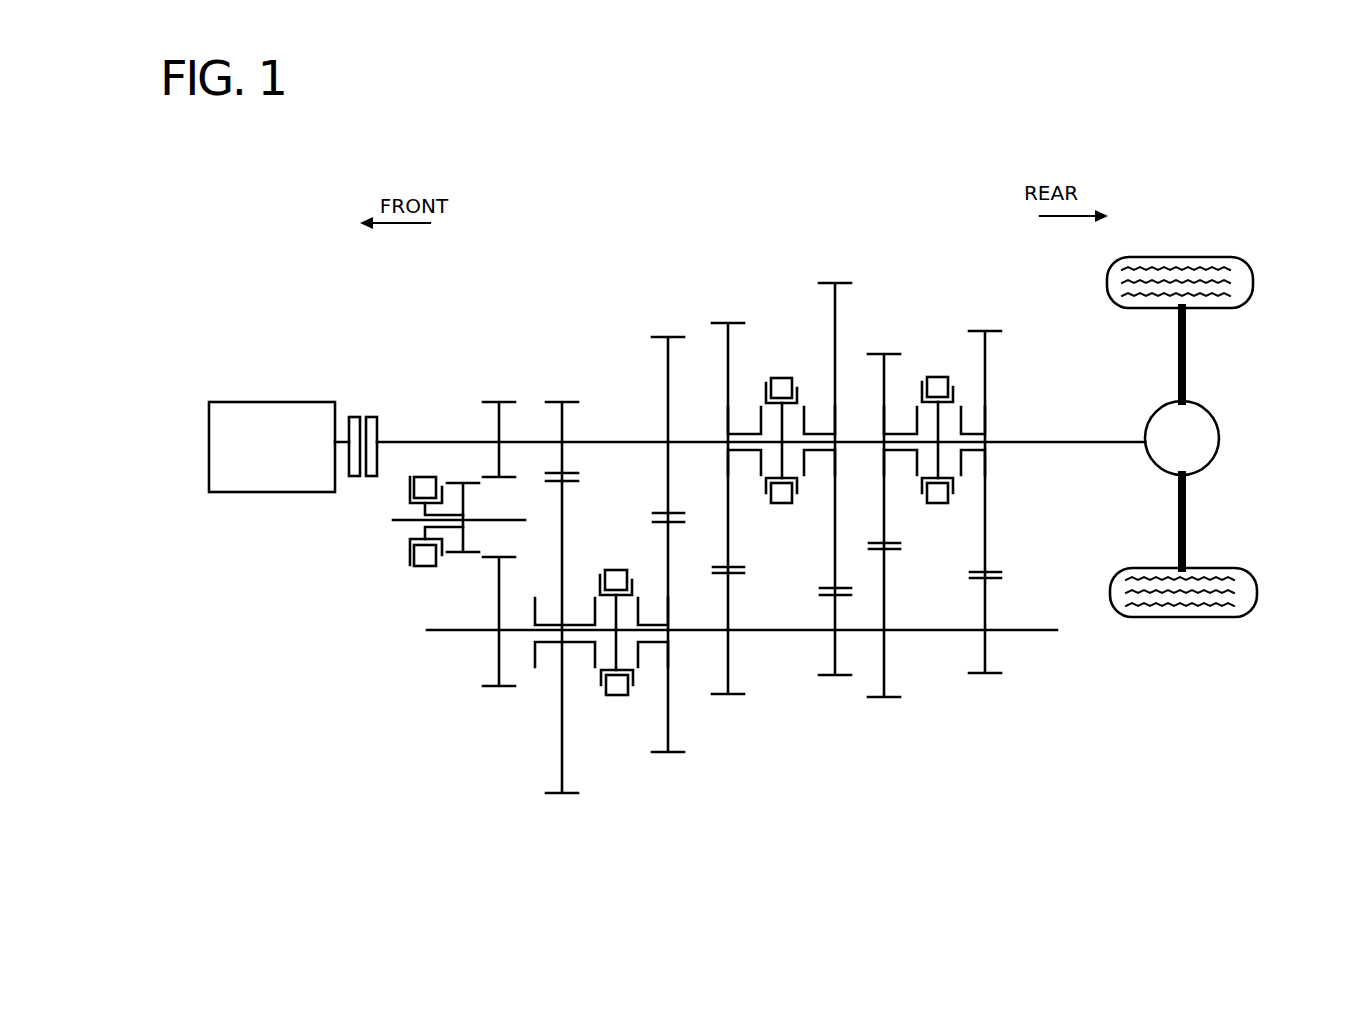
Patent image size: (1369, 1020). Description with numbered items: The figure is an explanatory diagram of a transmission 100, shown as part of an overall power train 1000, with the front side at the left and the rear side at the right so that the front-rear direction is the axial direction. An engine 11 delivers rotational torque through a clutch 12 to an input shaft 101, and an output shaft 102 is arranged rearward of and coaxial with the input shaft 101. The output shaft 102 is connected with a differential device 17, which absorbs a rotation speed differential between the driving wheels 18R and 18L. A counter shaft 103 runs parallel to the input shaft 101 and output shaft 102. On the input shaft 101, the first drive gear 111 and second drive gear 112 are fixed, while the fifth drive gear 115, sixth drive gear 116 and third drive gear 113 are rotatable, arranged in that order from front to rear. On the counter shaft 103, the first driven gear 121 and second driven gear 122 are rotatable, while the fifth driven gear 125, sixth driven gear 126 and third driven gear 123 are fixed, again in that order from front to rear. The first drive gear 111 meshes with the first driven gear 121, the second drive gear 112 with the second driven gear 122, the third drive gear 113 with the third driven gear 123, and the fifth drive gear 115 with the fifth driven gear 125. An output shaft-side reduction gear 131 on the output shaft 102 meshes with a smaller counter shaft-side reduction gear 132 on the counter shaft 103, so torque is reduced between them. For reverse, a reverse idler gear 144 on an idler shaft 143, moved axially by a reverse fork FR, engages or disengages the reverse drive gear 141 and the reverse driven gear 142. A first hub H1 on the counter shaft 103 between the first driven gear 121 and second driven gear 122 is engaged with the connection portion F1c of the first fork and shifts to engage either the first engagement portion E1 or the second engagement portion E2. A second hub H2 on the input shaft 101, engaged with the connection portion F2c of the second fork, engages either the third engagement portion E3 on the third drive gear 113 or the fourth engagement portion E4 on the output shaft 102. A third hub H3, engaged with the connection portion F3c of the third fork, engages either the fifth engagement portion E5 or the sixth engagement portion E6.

The vehicle power transmission system 1000 is at (745, 195).
The transmission 100 is at (720, 262).
The engine 11 is at (278, 402).
The clutch 12 is at (363, 394).
The input shaft 101 is at (445, 442).
The output shaft 102 is at (1044, 442).
The counter shaft 103 is at (1046, 630).
The first drive gear 111 is at (562, 402).
The second drive gear 112 is at (668, 337).
The third drive gear 113 is at (884, 354).
The fifth drive gear 115 is at (728, 323).
The sixth drive gear 116 is at (835, 283).
The first driven gear 121 is at (563, 796).
The second driven gear 122 is at (671, 755).
The third driven gear 123 is at (884, 700).
The fifth driven gear 125 is at (728, 697).
The sixth driven gear 126 is at (835, 678).
The output shaft-side reduction gear 131 is at (985, 331).
The counter shaft-side reduction gear 132 is at (985, 676).
The reverse drive gear 141 is at (499, 402).
The reverse driven gear 142 is at (500, 689).
The idler shaft 143 is at (522, 522).
The reverse idler gear 144 is at (463, 555).
The reverse fork FR is at (425, 568).
The first hub H1 is at (608, 611).
The second hub H2 is at (934, 413).
The third hub H3 is at (778, 414).
The first engagement portion E1 is at (591, 612).
The second engagement portion E2 is at (646, 612).
The third engagement portion E3 is at (915, 418).
The fourth engagement portion E4 is at (964, 418).
The fifth engagement portion E5 is at (758, 418).
The sixth engagement portion E6 is at (802, 418).
The connection portion of the first fork F1c is at (617, 697).
The connection portion of the second fork F2c is at (938, 505).
The connection portion of the third fork F3c is at (782, 505).
The differential device 17 is at (1172, 402).
The driving wheel 18R is at (1180, 257).
The driving wheel 18L is at (1180, 619).